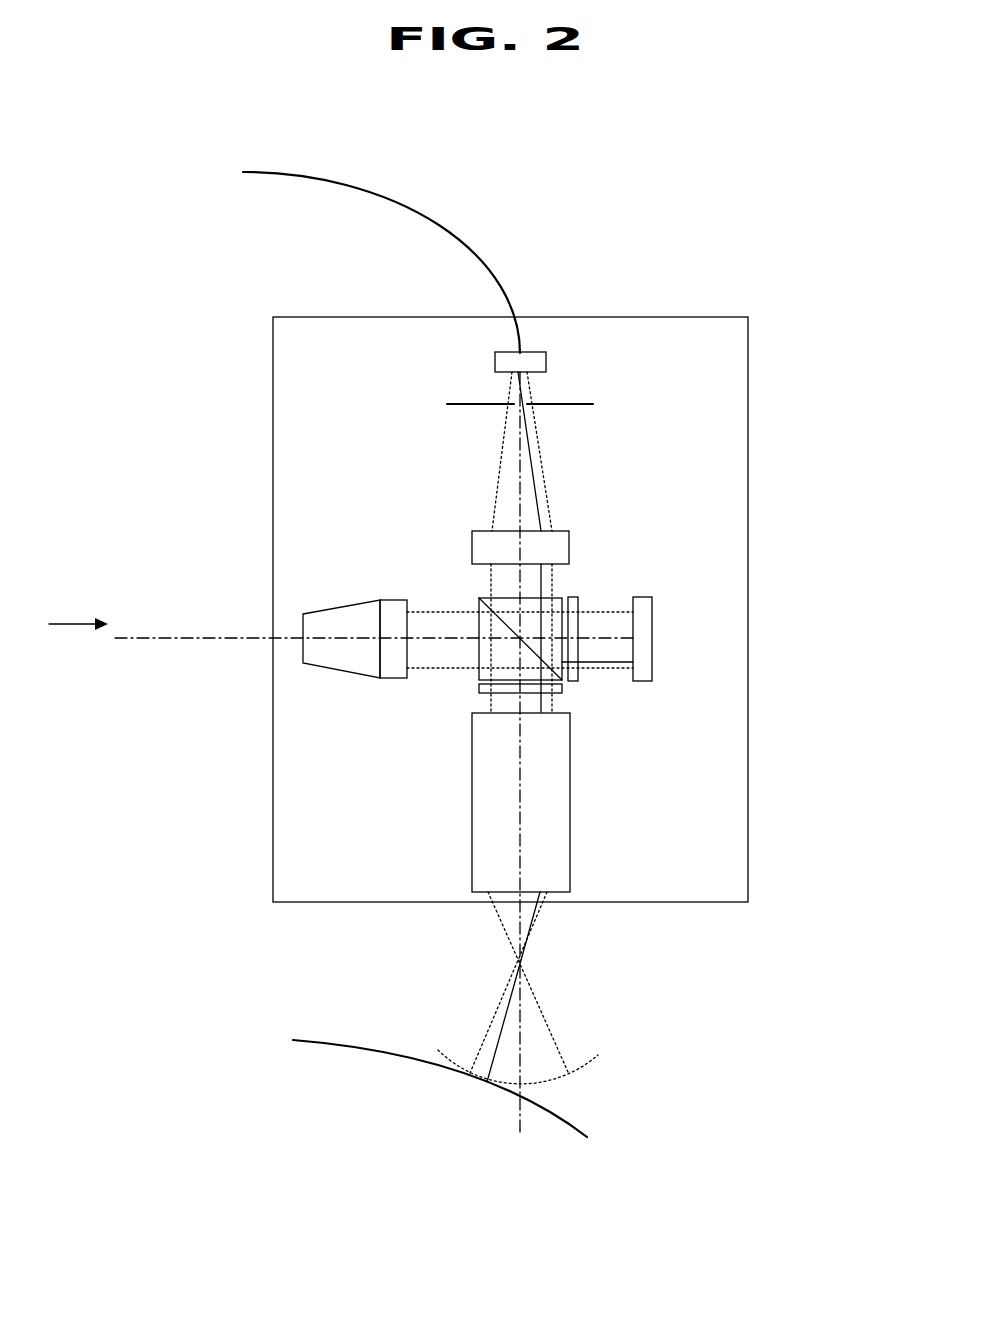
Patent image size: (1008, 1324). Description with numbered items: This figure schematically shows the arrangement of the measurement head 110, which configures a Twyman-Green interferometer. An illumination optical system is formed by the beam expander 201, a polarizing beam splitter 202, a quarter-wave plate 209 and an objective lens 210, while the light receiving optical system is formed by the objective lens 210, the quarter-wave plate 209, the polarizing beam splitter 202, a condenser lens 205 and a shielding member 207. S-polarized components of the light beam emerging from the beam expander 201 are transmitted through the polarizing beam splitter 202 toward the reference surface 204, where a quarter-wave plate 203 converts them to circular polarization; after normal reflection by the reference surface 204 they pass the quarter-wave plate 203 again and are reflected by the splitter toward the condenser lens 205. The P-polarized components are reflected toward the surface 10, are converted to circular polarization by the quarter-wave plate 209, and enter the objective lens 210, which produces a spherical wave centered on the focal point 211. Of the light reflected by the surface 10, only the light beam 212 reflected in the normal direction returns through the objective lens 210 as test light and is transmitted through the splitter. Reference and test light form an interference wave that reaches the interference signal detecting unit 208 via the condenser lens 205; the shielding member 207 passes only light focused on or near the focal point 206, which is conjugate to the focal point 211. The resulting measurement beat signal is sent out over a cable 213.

The measurement head 110 is at (273, 353).
The beam expander 201 is at (337, 623).
The polarizing beam splitter 202 is at (478, 667).
The λ/4 plate 203 is at (577, 597).
The reference surface 204 is at (642, 633).
The condenser lens 205 is at (560, 547).
The focal point 206 is at (513, 412).
The shielding member 207 is at (590, 403).
The interference signal detecting unit 208 is at (534, 360).
The λ/4 plate 209 is at (555, 688).
The objective lens 210 is at (545, 825).
The focal point 211 is at (525, 962).
The light beam 212 is at (498, 1033).
The cable 213 is at (378, 190).
The surface 10 is at (313, 1040).